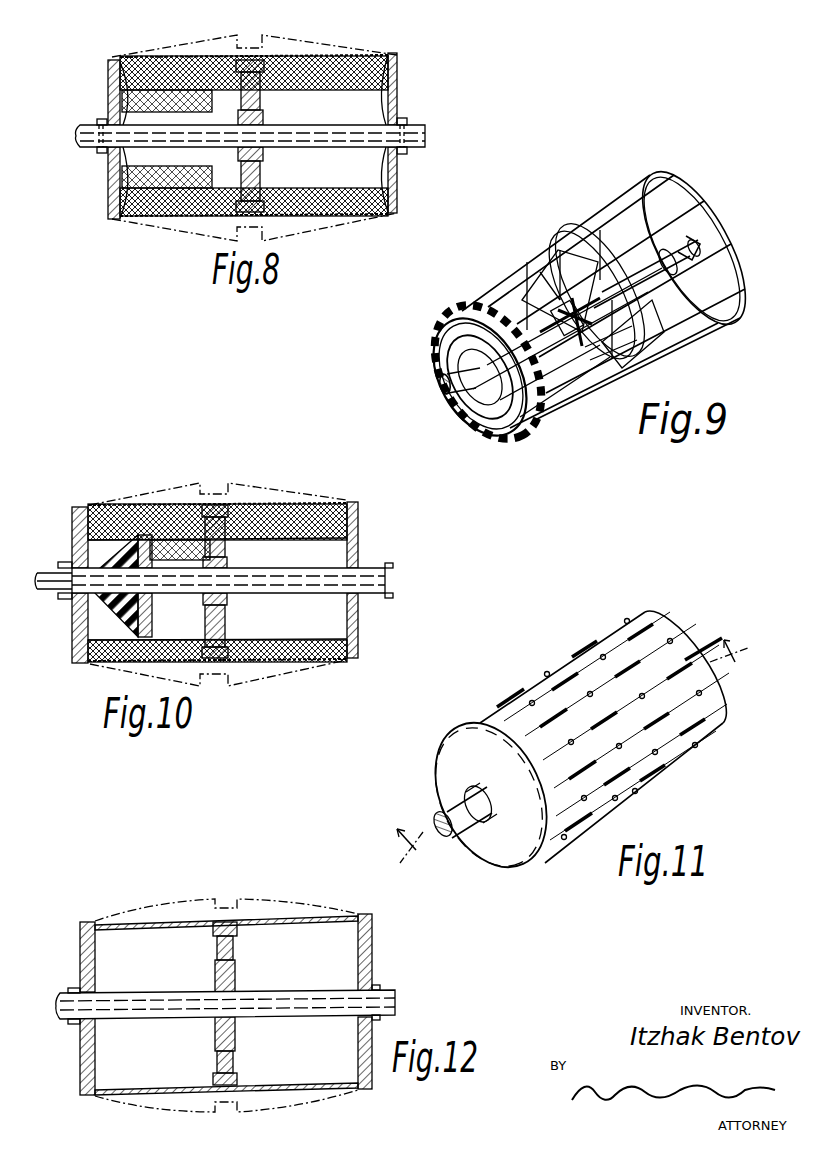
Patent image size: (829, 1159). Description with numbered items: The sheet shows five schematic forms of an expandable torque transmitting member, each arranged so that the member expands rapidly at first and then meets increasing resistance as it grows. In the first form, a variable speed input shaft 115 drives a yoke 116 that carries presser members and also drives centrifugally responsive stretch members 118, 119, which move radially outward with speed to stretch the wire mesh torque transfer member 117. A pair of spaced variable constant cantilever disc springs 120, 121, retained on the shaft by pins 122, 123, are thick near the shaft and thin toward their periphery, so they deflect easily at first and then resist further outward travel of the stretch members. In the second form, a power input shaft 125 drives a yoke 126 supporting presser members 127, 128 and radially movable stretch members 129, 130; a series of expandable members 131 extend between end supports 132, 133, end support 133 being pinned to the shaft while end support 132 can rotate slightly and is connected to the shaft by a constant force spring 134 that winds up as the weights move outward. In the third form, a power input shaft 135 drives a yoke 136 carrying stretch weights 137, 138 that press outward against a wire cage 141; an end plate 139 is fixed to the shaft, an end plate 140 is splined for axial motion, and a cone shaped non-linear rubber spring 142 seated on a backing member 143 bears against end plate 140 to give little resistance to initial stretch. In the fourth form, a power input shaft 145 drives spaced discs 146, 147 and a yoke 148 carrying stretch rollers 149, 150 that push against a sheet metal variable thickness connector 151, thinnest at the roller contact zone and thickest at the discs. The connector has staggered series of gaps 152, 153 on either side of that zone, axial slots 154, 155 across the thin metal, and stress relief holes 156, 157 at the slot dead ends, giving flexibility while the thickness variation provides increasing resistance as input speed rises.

In FIG. 8, the shaft 115 is at (84, 151).
In FIG. 8, the yoke 116 is at (262, 96).
In FIG. 8, the torque transfer member 117 is at (200, 218).
In FIG. 8, the stretch member 118 is at (240, 78).
In FIG. 8, the stretch member 119 is at (255, 186).
In FIG. 8, the variable constant cantilever disc spring 120 is at (108, 100).
In FIG. 8, the variable constant cantilever disc spring 121 is at (397, 88).
In FIG. 8, the pin 122 is at (108, 160).
In FIG. 8, the pin 123 is at (402, 118).
In FIG. 9, the power input shaft 125 is at (456, 398).
In FIG. 9, the yoke 126 is at (570, 322).
In FIG. 9, the presser member 127 is at (530, 268).
In FIG. 9, the presser member 128 is at (650, 343).
In FIG. 9, the stretch member 129 is at (570, 228).
In FIG. 9, the stretch member 130 is at (610, 380).
In FIG. 9, the expandable members 131 is at (490, 292).
In FIG. 9, the end support 132 is at (446, 312).
In FIG. 9, the end support 133 is at (700, 180).
In FIG. 9, the constant force spring 134 is at (496, 426).
In FIG. 10, the power input shaft 135 is at (40, 598).
In FIG. 10, the yoke 136 is at (227, 603).
In FIG. 10, the stretch weight 137 is at (222, 505).
In FIG. 10, the stretch weight 138 is at (228, 660).
In FIG. 10, the end plate 139 is at (358, 528).
In FIG. 10, the end plate 140 is at (73, 507).
In FIG. 10, the wire cage 141 is at (320, 500).
In FIG. 10, the non-linear rubber spring 142 is at (115, 589).
In FIG. 10, the backing member 143 is at (145, 535).
In FIG. 11, the power input shaft 145 is at (452, 832).
In FIG. 12, the power input shaft 145 is at (60, 1022).
In FIG. 11, the disc 146 is at (506, 857).
In FIG. 12, the disc 146 is at (80, 942).
In FIG. 12, the disc 147 is at (372, 943).
In FIG. 12, the yoke 148 is at (236, 968).
In FIG. 12, the stretch roller 149 is at (214, 930).
In FIG. 12, the stretch roller 150 is at (215, 1078).
In FIG. 11, the variable thickness connector 151 is at (640, 786).
In FIG. 12, the variable thickness connector 151 is at (280, 921).
In FIG. 11, the gaps 152 is at (582, 726).
In FIG. 11, the gaps 153 is at (694, 658).
In FIG. 11, the slot 154 is at (572, 676).
In FIG. 11, the slot 155 is at (596, 732).
In FIG. 11, the stress relief hole 156 is at (628, 676).
In FIG. 11, the stress relief hole 157 is at (572, 724).